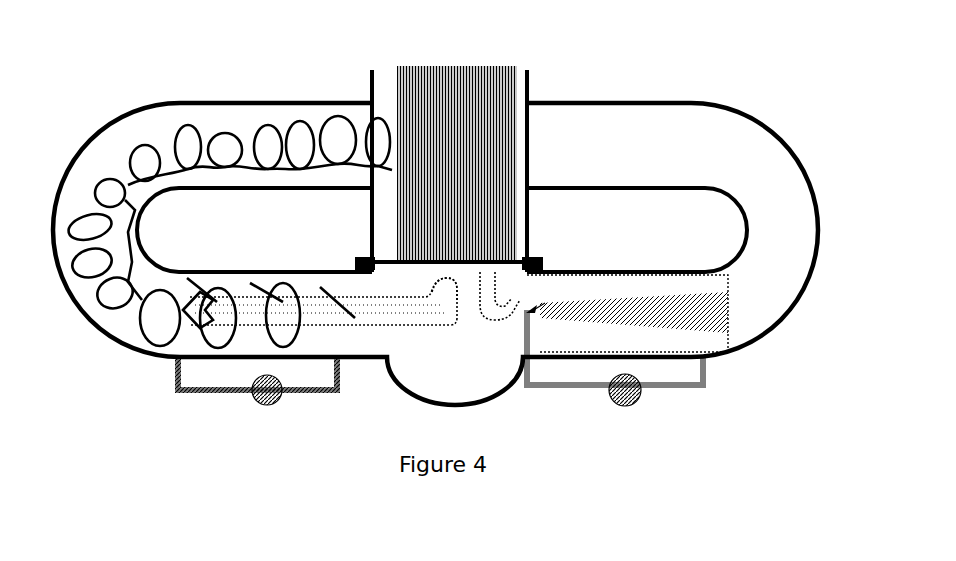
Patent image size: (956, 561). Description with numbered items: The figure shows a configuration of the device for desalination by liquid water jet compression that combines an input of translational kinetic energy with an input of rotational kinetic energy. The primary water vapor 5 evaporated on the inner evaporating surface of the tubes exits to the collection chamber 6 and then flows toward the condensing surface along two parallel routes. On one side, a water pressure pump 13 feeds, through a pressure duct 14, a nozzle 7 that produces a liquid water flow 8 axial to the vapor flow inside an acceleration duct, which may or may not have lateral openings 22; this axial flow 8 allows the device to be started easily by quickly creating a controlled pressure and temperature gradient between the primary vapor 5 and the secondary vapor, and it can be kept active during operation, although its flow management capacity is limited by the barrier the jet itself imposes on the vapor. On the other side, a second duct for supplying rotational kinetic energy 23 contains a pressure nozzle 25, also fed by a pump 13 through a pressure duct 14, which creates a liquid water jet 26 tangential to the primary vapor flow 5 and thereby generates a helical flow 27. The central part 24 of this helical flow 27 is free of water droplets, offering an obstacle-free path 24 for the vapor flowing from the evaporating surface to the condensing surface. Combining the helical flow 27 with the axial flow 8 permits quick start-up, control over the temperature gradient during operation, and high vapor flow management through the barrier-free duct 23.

The primary water vapor 5 is at (444, 284).
The collection chamber 6 is at (500, 303).
The nozzle 7 is at (539, 303).
The axial water flow 8 is at (634, 312).
The water pressure pump 13 is at (446, 390).
The pressure duct 14 is at (453, 354).
The lateral openings 22 is at (627, 313).
The duct for supplying rotational kinetic energy 23 is at (442, 230).
The central part of the helical flow 24 is at (323, 301).
The pressure nozzle 25 is at (327, 352).
The tangential liquid water jet 26 is at (172, 322).
The helical flow 27 is at (229, 231).